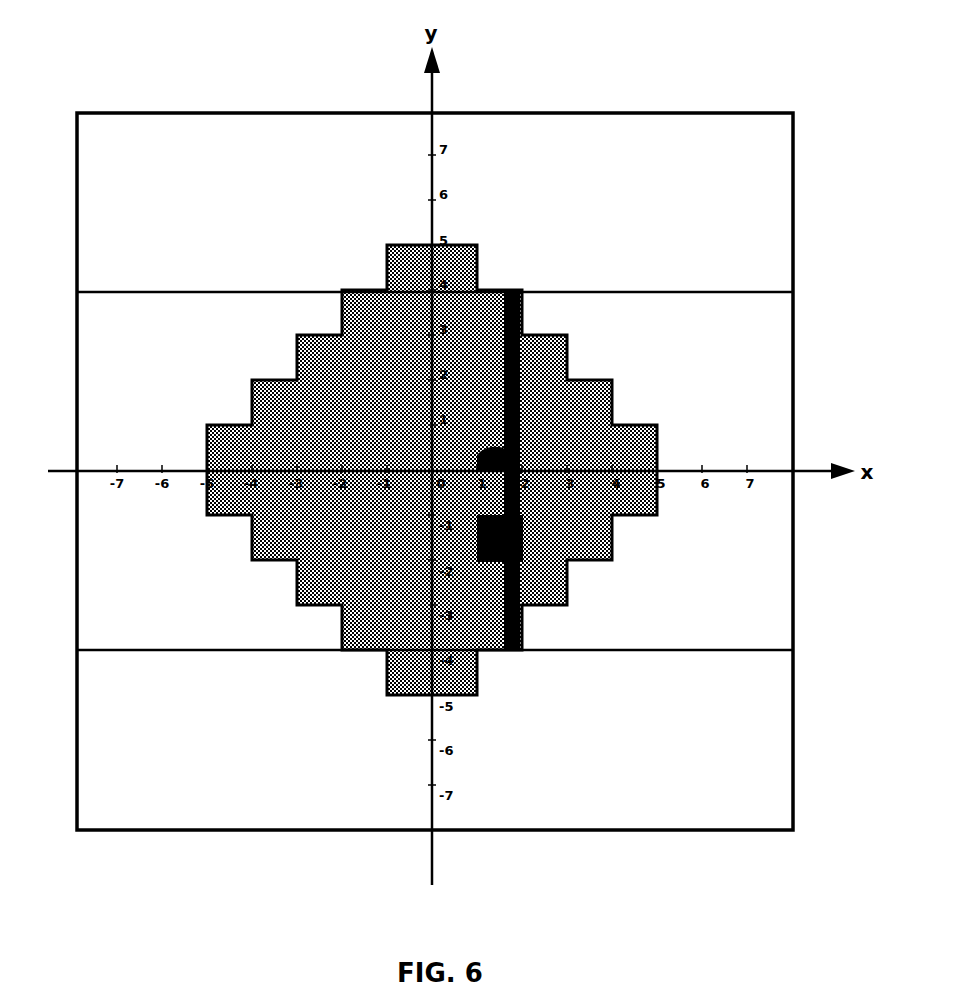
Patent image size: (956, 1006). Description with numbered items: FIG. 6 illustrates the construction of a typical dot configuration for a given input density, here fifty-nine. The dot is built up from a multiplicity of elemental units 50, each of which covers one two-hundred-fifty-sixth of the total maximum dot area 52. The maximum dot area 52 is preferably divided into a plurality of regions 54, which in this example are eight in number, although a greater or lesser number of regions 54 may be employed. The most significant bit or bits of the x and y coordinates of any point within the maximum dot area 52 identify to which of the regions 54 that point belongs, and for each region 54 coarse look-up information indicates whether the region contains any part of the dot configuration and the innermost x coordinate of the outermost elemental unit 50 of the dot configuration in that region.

The elemental unit 50 is at (523, 548).
The maximum dot area 52 is at (585, 112).
The region 54 is at (96, 239).